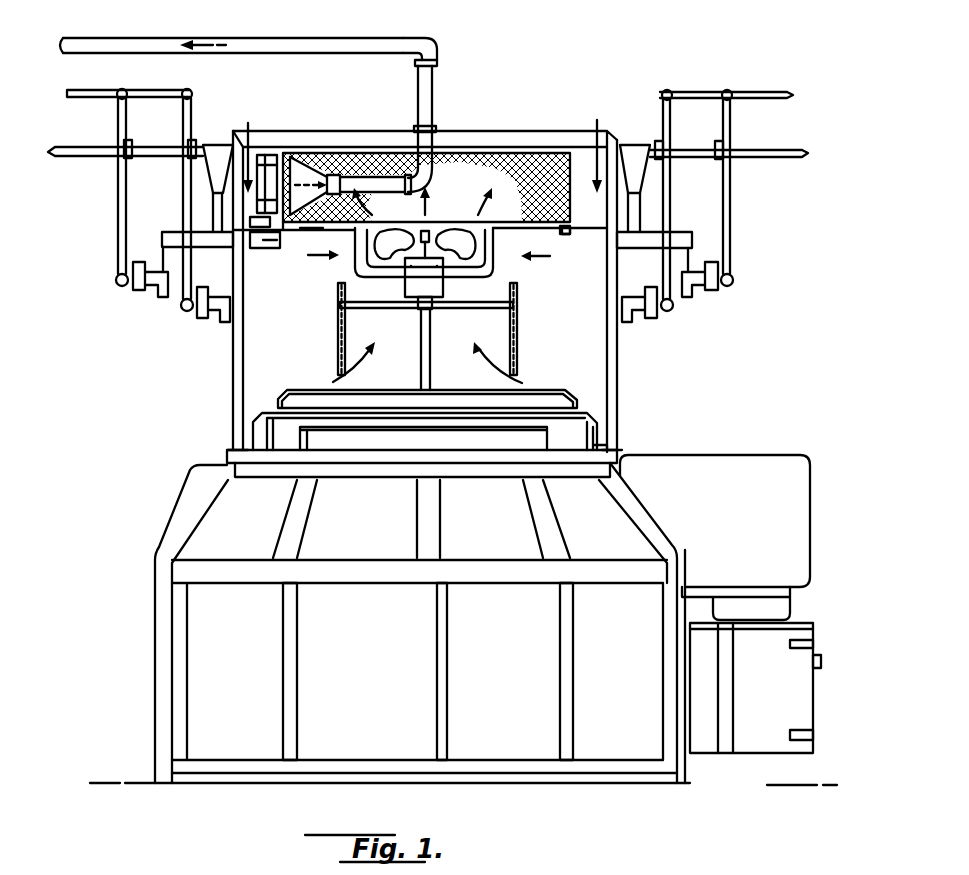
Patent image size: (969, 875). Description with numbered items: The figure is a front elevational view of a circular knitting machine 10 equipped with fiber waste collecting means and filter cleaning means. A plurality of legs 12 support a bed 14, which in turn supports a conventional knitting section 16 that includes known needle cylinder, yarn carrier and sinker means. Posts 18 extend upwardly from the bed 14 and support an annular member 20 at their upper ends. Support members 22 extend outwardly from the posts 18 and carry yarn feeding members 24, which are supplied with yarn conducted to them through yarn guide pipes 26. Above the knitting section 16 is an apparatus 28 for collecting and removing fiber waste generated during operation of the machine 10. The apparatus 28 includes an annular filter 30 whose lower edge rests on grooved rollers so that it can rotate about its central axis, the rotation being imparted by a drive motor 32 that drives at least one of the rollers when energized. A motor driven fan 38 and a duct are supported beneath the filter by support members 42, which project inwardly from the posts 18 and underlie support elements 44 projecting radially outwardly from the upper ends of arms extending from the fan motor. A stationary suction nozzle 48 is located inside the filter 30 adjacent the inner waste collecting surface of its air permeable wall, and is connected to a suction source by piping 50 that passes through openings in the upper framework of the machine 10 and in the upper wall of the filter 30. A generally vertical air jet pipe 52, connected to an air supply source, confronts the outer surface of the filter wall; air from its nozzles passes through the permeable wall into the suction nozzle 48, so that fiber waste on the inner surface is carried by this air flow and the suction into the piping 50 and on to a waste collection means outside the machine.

The circular knitting machine 10 is at (130, 632).
The legs 12 is at (288, 723).
The bed 14 is at (353, 470).
The knitting section 16 is at (590, 405).
The posts 18 is at (233, 403).
The annular member 20 is at (462, 131).
The support members 22 is at (162, 240).
The yarn feeding members 24 is at (152, 333).
The yarn guide pipes 26 is at (178, 202).
The fiber waste collecting and removing apparatus 28 is at (330, 332).
The annular filter 30 is at (510, 153).
The drive motor 32 is at (262, 250).
The motor driven fan 38 is at (365, 263).
The support members 42 is at (565, 230).
The support elements 44 is at (503, 230).
The suction nozzle 48 is at (298, 170).
The piping 50 is at (322, 40).
The air jet pipe 52 is at (262, 163).